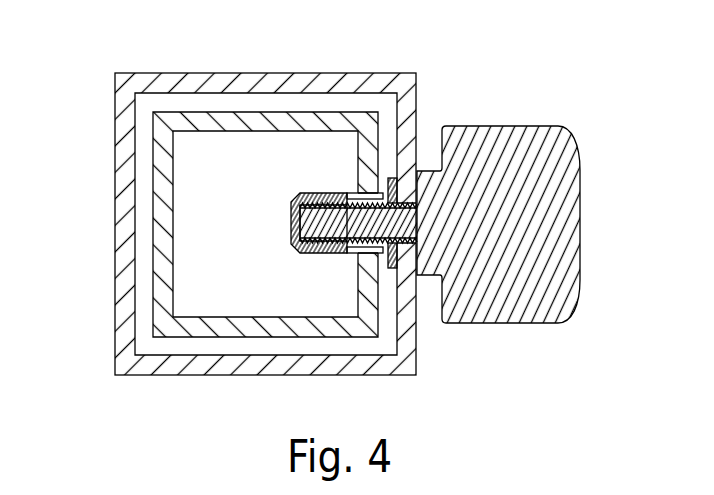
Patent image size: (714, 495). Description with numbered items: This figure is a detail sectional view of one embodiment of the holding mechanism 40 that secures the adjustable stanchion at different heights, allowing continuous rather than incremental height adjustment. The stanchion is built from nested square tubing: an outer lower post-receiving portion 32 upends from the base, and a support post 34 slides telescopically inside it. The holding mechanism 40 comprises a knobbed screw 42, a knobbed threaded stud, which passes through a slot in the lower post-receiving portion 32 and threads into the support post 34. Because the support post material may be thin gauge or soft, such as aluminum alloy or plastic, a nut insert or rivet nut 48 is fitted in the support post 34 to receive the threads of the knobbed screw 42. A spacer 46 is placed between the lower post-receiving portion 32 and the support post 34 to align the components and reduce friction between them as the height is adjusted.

The lower post-receiving portion 32 is at (124, 131).
The support post 34 is at (303, 115).
The holding mechanism 40 is at (435, 165).
The knobbed screw 42 is at (573, 192).
The spacer 46 is at (387, 183).
The rivet nut 48 is at (295, 200).